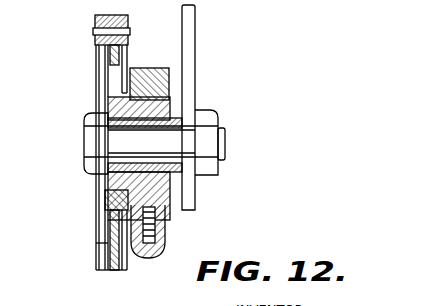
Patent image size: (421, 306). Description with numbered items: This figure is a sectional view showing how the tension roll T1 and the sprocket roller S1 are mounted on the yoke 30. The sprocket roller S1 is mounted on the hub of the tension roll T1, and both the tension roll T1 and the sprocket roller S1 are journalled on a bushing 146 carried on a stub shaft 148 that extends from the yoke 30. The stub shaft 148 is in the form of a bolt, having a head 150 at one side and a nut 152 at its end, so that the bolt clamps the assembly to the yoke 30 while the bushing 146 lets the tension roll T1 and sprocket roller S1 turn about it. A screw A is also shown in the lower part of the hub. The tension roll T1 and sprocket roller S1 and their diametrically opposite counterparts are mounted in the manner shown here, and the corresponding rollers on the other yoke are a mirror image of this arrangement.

The bushing 146 is at (124, 169).
The tension roll T1 is at (143, 70).
The sprocket roller S1 is at (110, 51).
The yoke 30 is at (190, 59).
The nut 152 is at (213, 112).
The stub shaft 148 is at (183, 139).
The head 150 is at (88, 143).
The screw A is at (167, 231).